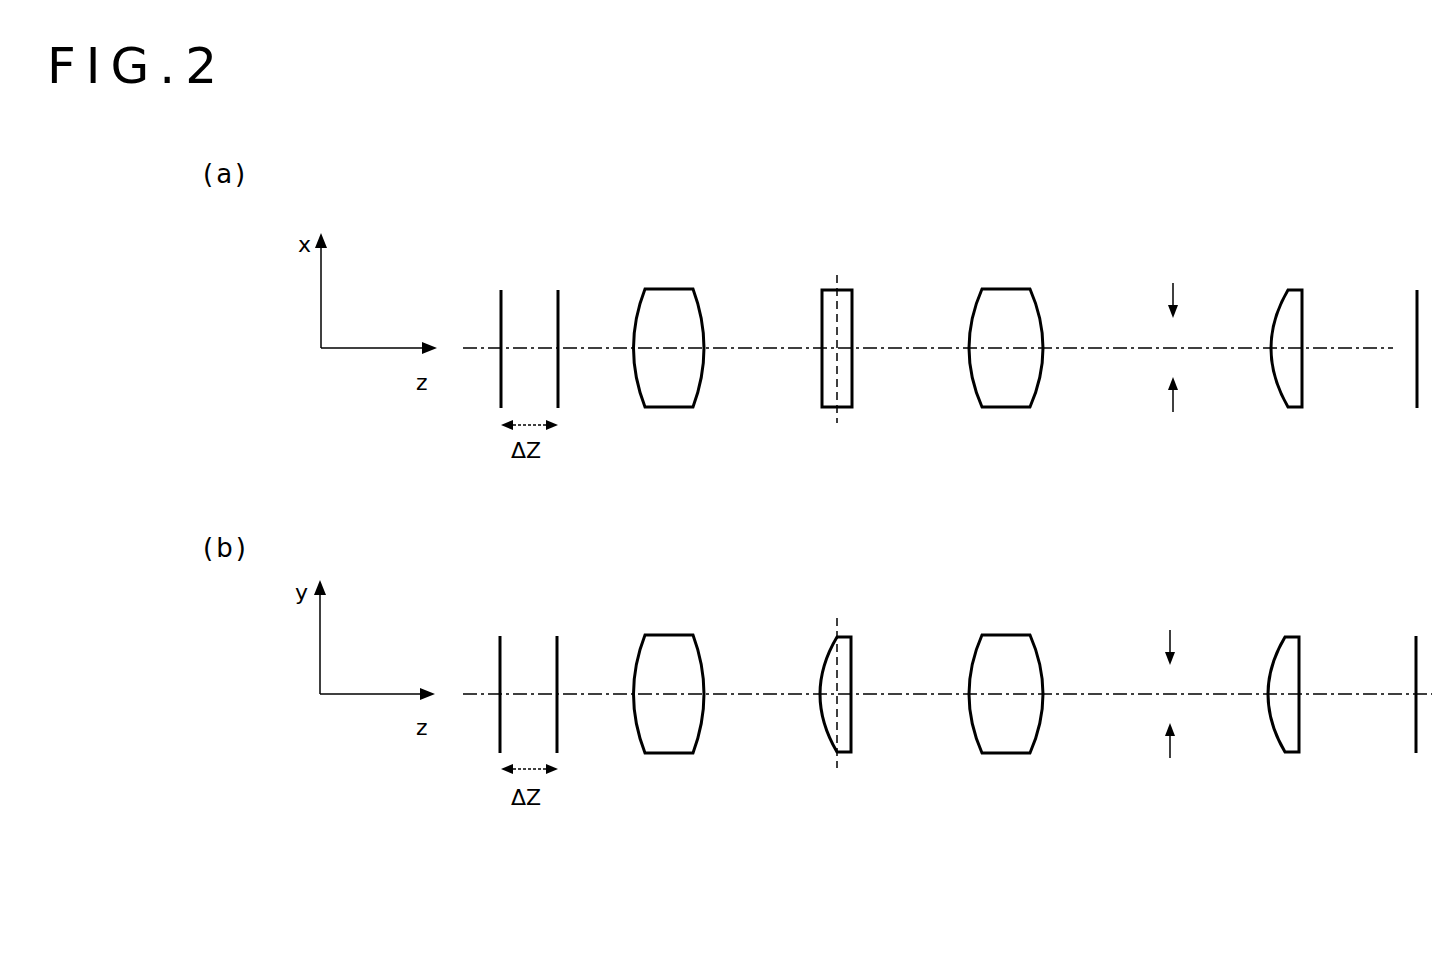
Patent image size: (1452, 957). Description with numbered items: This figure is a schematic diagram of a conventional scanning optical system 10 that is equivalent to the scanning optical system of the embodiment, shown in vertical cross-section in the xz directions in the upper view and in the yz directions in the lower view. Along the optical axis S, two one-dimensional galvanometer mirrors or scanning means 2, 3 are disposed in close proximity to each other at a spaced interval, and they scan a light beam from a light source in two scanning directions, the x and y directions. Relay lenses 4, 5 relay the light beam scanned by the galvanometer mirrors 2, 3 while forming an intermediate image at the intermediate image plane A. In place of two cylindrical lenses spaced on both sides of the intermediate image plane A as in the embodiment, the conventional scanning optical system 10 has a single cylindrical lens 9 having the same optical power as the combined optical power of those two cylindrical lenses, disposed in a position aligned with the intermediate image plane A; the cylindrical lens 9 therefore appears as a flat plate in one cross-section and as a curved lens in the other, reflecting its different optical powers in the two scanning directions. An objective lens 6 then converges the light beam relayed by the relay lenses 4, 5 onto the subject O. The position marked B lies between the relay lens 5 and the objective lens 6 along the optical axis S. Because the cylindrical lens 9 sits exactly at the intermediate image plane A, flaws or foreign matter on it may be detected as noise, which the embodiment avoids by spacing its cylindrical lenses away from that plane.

The one-dimensional galvanometer mirror 2 is at (501, 312).
The one-dimensional galvanometer mirror 3 is at (558, 312).
The relay lens 4 is at (672, 289).
The relay lens 5 is at (1005, 289).
The objective lens 6 is at (1294, 290).
The cylindrical lens 9 is at (830, 288).
The scanning optical system 10 is at (1078, 178).
The optical axis S is at (753, 346).
The intermediate image plane A is at (850, 272).
The beam position B is at (1158, 288).
The subject O is at (1417, 312).